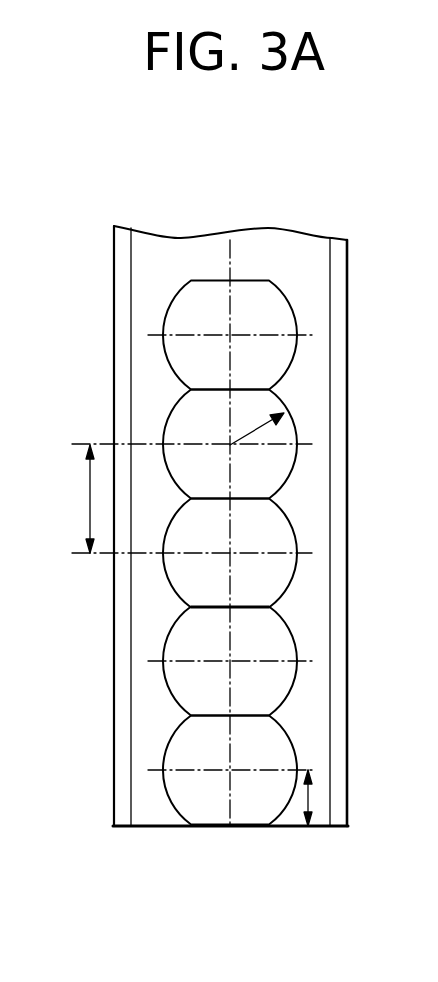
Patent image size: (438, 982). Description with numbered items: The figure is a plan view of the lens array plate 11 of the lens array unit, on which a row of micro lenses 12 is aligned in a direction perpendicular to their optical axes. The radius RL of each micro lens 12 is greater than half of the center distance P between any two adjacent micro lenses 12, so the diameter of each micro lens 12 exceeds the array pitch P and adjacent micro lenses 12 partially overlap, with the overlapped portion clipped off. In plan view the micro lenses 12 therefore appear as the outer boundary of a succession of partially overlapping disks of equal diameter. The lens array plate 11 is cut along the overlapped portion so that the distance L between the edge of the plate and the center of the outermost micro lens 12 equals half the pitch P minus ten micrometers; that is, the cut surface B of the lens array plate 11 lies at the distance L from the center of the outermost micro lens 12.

The lens array plate 11 is at (114, 356).
The micro lens 12 is at (289, 302).
The center distance P is at (77, 499).
The distance between plate edge and center of outermost micro lens L is at (313, 800).
The radius of micro lens RL is at (276, 418).
The cut surface B is at (208, 827).